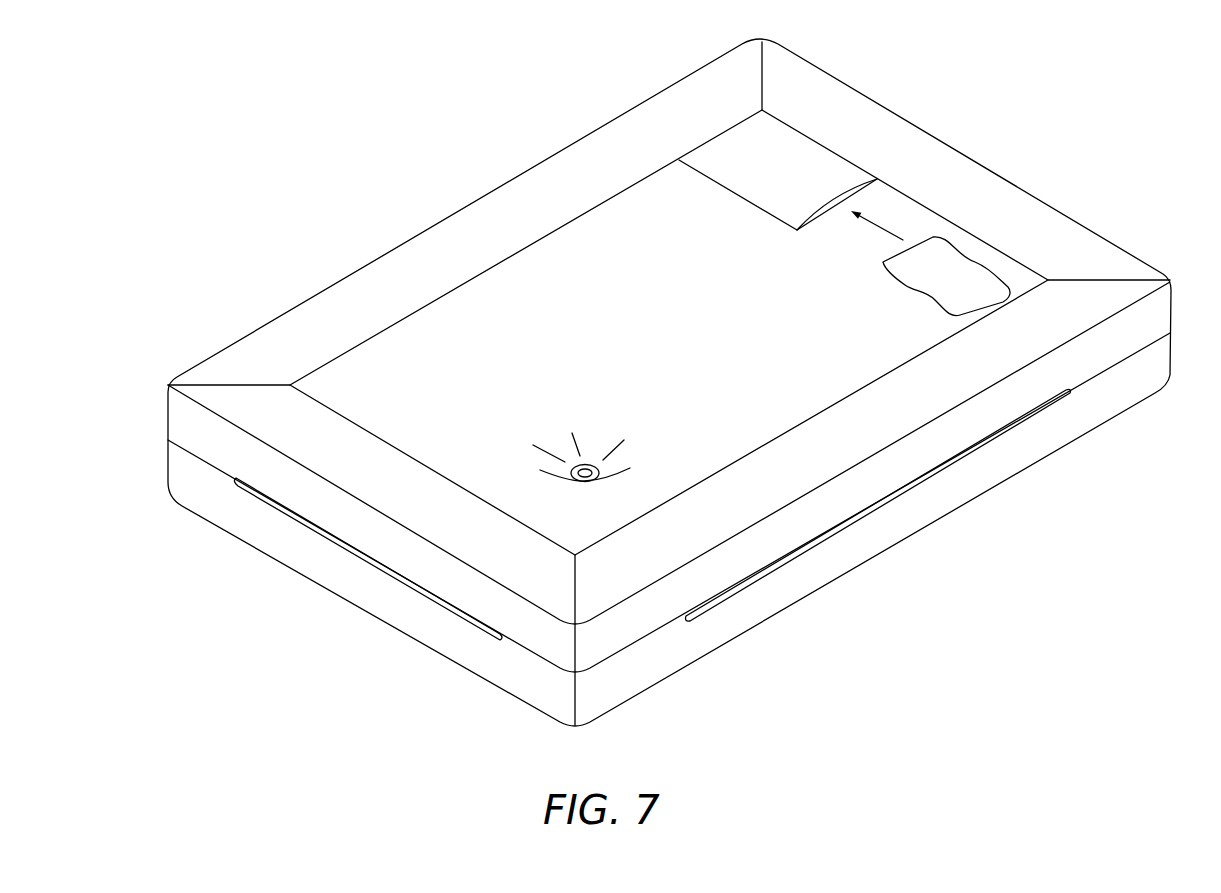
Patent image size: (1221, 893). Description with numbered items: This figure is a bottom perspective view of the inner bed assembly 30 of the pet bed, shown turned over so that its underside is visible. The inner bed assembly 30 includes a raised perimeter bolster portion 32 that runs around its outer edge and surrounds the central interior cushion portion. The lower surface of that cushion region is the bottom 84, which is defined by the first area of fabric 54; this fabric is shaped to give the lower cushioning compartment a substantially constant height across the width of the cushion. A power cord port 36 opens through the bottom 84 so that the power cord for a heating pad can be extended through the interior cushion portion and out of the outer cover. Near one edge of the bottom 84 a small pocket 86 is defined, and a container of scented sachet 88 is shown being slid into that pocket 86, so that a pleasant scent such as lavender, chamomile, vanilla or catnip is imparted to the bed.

The inner bed assembly 30 is at (1050, 142).
The perimeter bolster portion 32 is at (852, 104).
The power cord port 36 is at (588, 462).
The first area of fabric 54 is at (770, 422).
The bottom 84 is at (560, 247).
The pocket 86 is at (723, 152).
The scented sachet 88 is at (965, 270).